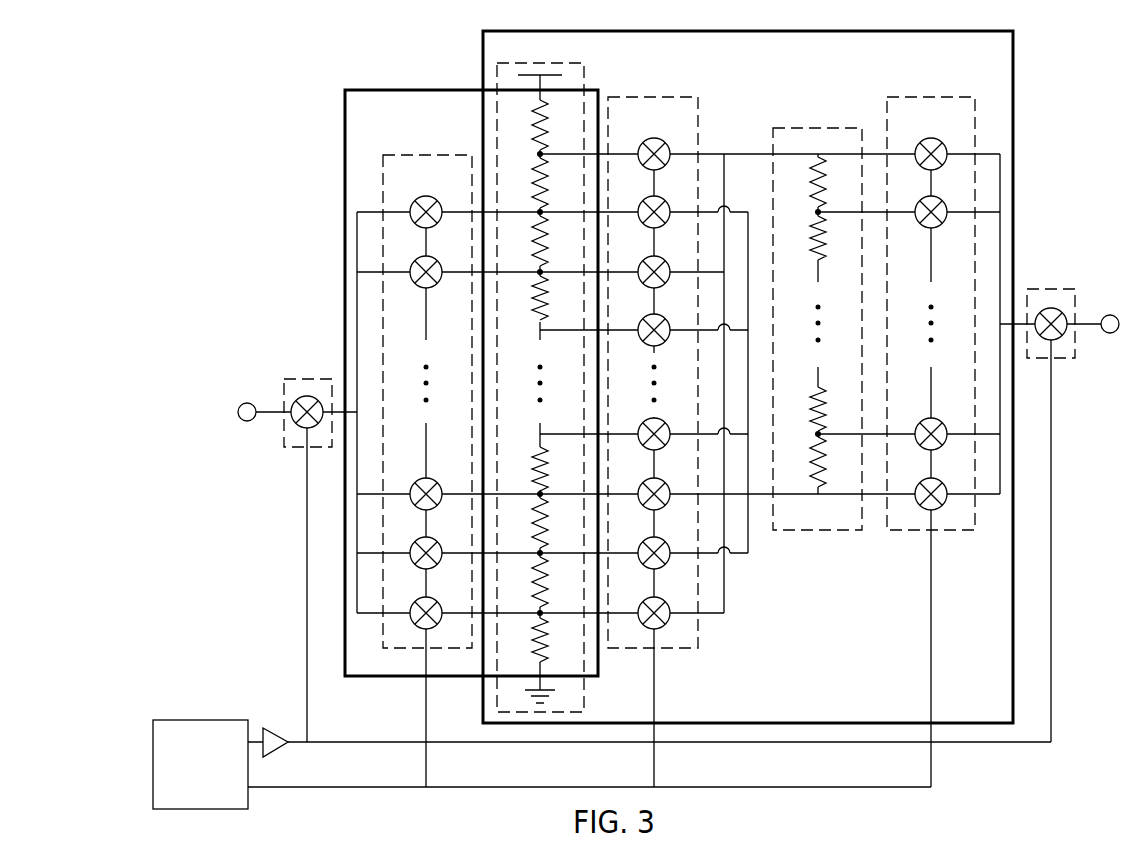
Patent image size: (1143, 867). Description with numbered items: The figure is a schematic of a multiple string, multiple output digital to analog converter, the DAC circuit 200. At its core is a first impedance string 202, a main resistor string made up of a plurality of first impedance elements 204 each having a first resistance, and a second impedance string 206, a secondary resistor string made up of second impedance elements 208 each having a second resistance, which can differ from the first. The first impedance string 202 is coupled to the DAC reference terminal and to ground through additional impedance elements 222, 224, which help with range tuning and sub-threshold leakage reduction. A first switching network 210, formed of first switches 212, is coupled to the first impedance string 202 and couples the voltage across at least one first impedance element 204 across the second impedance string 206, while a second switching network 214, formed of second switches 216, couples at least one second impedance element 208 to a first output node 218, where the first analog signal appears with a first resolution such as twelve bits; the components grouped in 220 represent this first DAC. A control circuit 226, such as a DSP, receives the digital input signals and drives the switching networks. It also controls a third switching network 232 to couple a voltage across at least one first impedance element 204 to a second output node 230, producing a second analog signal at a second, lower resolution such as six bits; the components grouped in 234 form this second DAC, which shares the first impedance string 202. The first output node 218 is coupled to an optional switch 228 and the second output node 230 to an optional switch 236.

The DAC circuit 200 is at (236, 46).
The first impedance string 202 is at (543, 63).
The first impedance elements 204 is at (528, 190).
The second impedance string 206 is at (820, 128).
The second impedance elements 208 is at (806, 190).
The first switching network 210 is at (655, 97).
The first switches 212 is at (667, 164).
The second switching network 214 is at (932, 97).
The second switches 216 is at (944, 164).
The first output node 218 is at (1110, 333).
The first DAC 220 is at (748, 31).
The additional impedance element 222 is at (528, 130).
The additional impedance element 224 is at (528, 650).
The control circuit 226 is at (200, 720).
The optional switch 228 is at (1051, 306).
The second output node 230 is at (247, 421).
The third switching network 232 is at (428, 155).
The second DAC 234 is at (405, 90).
The optional switch 236 is at (307, 396).